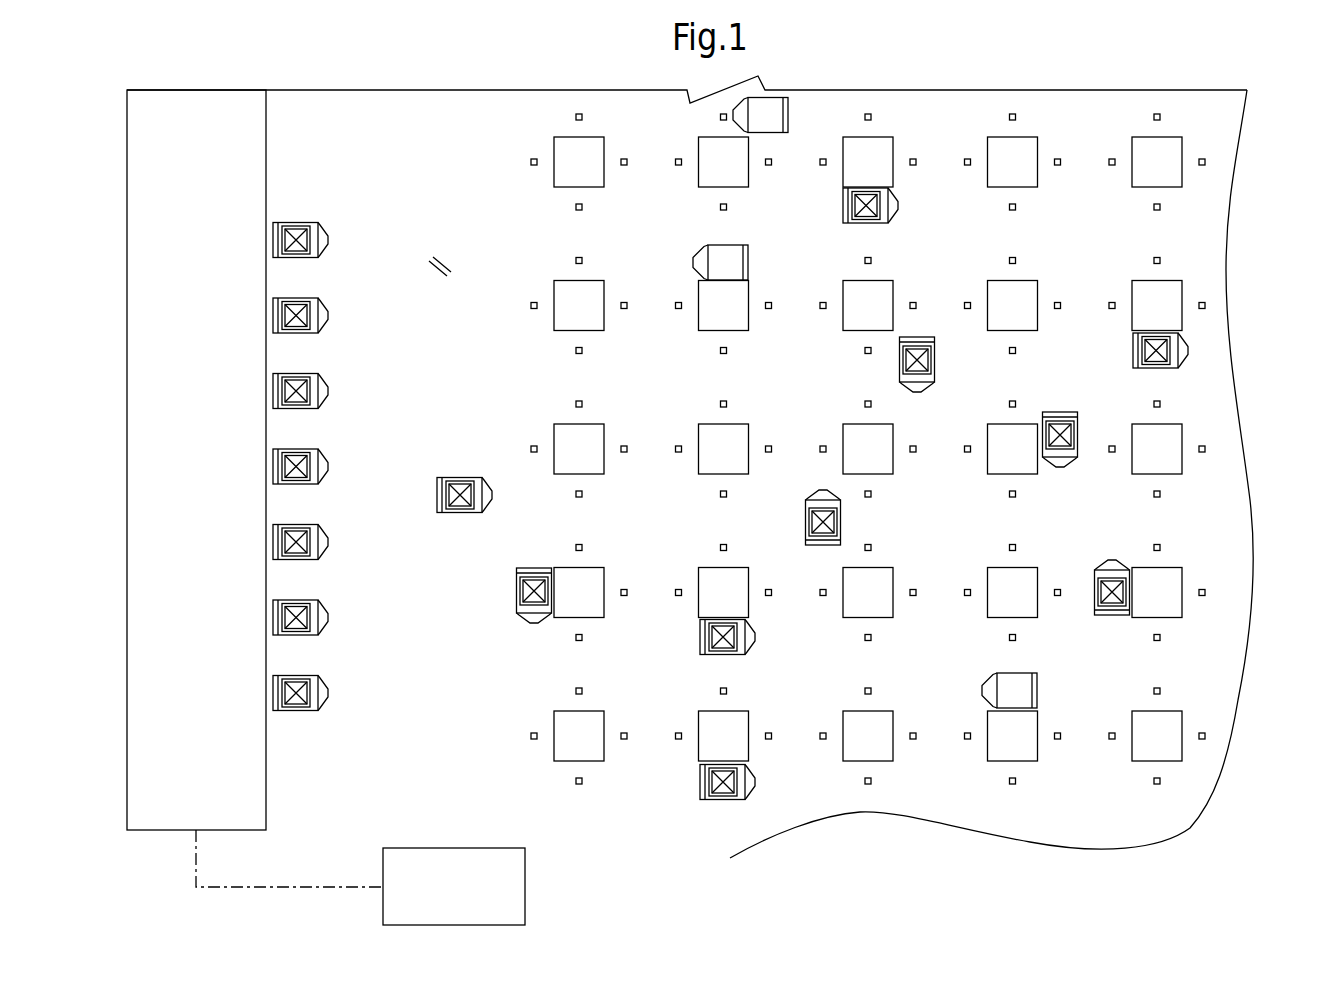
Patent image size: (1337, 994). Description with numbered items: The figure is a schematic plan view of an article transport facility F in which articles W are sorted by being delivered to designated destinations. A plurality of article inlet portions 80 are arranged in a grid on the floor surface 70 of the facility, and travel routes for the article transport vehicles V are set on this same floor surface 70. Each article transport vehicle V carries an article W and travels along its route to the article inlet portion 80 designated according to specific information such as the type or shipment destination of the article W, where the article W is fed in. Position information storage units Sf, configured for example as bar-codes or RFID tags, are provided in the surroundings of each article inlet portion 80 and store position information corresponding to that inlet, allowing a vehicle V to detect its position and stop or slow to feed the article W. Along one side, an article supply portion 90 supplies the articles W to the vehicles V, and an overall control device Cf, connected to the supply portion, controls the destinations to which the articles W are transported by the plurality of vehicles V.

The floor surface 70 is at (446, 268).
The article inlet portion 80 is at (617, 340).
The article supply portion 90 is at (266, 786).
The overall control device Cf is at (450, 848).
The article transport facility F is at (1253, 196).
The position information storage unit Sf is at (582, 262).
The article transport vehicle V is at (330, 238).
The article W is at (297, 222).